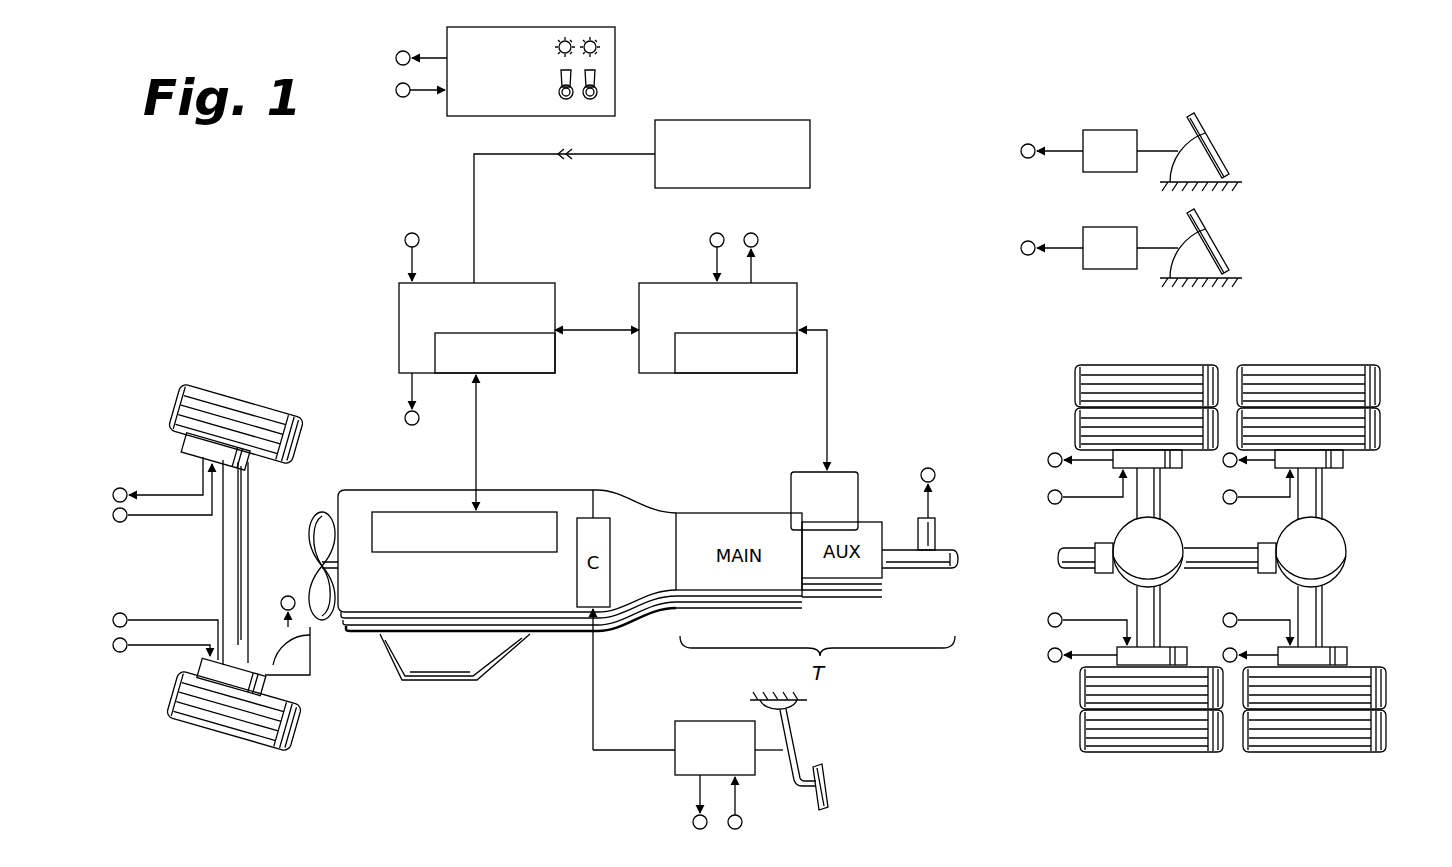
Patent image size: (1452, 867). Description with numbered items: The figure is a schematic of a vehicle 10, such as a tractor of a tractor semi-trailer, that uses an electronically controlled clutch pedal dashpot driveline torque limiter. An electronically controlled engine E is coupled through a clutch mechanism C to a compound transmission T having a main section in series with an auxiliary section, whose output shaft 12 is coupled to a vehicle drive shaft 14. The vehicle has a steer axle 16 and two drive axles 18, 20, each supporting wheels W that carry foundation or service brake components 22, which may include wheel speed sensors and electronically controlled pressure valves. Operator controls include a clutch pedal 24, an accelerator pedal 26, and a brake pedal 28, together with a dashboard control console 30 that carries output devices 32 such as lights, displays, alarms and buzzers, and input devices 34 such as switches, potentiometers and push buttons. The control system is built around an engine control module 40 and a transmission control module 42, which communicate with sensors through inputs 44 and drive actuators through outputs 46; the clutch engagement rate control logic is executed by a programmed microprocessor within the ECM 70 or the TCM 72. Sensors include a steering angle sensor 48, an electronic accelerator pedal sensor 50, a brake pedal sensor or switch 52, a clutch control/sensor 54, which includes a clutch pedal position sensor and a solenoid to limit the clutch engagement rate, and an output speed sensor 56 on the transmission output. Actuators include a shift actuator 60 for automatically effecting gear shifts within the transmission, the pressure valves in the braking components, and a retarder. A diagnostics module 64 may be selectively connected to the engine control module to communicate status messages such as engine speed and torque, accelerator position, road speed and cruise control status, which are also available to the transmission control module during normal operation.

The vehicle 10 is at (463, 750).
The output shaft 12 is at (935, 572).
The vehicle drive shaft 14 is at (1068, 568).
The steer axle 16 is at (222, 538).
The drive axle 18 is at (1077, 678).
The drive axle 20 is at (1325, 610).
The service brake components 22 is at (254, 479).
The clutch pedal 24 is at (790, 722).
The accelerator pedal 26 is at (1210, 126).
The brake pedal 28 is at (1210, 235).
The dashboard control console 30 is at (445, 108).
The output devices 32 is at (600, 45).
The input devices 34 is at (600, 82).
The engine control module 40 is at (399, 305).
The transmission control module 42 is at (797, 297).
The inputs 44 is at (396, 254).
The outputs 46 is at (398, 410).
The steering angle sensor 48 is at (316, 657).
The electronic accelerator pedal sensor 50 is at (1095, 130).
The brake pedal sensor 52 is at (1098, 227).
The clutch control/sensor 54 is at (695, 721).
The output speed sensor 56 is at (935, 525).
The shift actuator 60 is at (843, 472).
The diagnostics module 64 is at (810, 143).
The ECM 70 is at (520, 375).
The TCM 72 is at (700, 375).